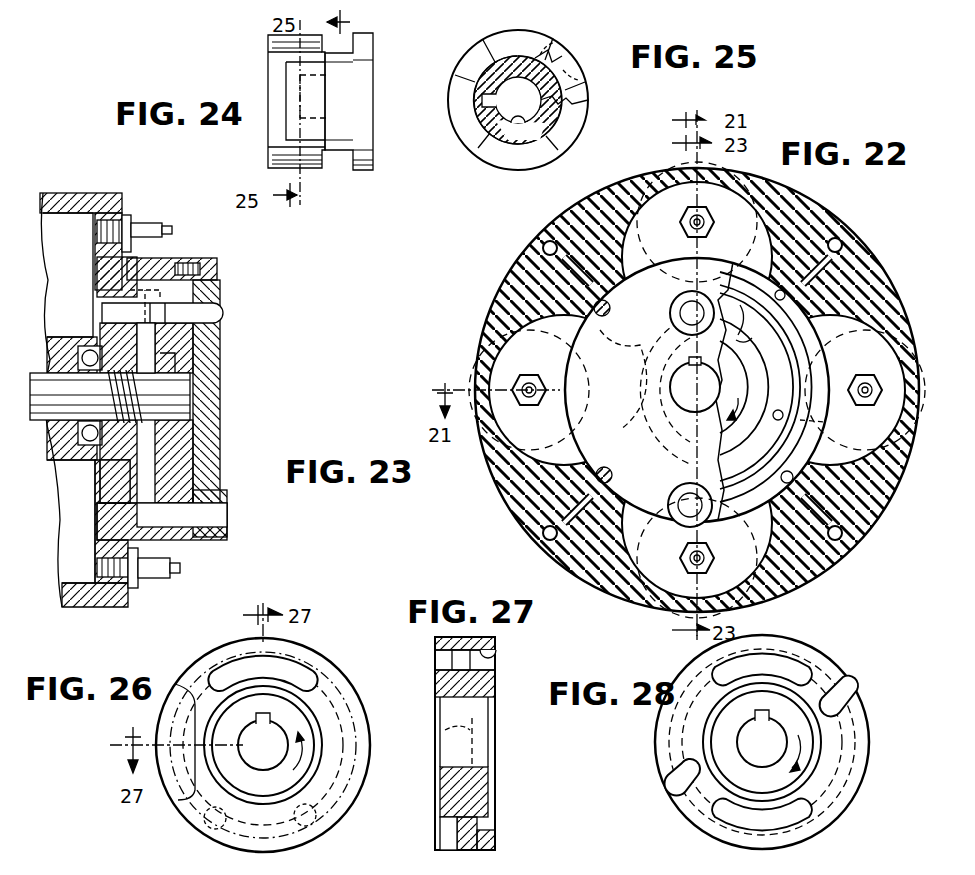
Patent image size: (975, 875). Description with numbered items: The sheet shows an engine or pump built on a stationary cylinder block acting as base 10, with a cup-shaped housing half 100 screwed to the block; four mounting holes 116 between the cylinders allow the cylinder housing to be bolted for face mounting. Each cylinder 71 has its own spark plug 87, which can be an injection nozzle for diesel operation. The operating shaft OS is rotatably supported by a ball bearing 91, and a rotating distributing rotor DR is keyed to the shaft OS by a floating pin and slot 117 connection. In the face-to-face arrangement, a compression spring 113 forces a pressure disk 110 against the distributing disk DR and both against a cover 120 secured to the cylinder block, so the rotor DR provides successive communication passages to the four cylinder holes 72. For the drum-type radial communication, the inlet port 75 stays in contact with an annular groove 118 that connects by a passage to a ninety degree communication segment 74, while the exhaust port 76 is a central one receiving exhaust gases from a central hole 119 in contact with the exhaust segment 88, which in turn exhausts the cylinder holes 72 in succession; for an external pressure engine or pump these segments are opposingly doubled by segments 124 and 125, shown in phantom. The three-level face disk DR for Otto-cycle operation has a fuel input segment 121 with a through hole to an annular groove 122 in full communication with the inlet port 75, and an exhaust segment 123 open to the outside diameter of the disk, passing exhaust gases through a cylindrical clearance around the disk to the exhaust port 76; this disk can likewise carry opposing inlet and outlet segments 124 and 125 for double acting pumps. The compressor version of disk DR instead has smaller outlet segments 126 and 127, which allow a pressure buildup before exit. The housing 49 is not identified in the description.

In FIG. 23, the base 10 is at (125, 186).
In FIG. 22, the housing 49 is at (512, 521).
In FIG. 23, the cylinder 71 is at (75, 590).
In FIG. 23, the cylinder holes 72 is at (100, 308).
In FIG. 24, the communication segment 74 is at (268, 62).
In FIG. 25, the communication segment 74 is at (476, 136).
In FIG. 22, the inlet port 75 is at (690, 293).
In FIG. 23, the inlet port 75 is at (223, 313).
In FIG. 22, the exhaust port 76 is at (690, 483).
In FIG. 23, the exhaust port 76 is at (228, 510).
In FIG. 22, the spark plug 87 is at (680, 232).
In FIG. 23, the spark plug 87 is at (150, 222).
In FIG. 25, the exhaust segment 88 is at (527, 150).
In FIG. 23, the ball bearing 91 is at (75, 350).
In FIG. 22, the housing half 100 is at (520, 280).
In FIG. 23, the pressure disk 110 is at (150, 280).
In FIG. 23, the compression spring 113 is at (100, 475).
In FIG. 22, the mounting holes 116 is at (542, 250).
In FIG. 25, the pin and slot connection 117 is at (482, 100).
In FIG. 23, the pin and slot connection 117 is at (170, 395).
In FIG. 26, the pin and slot connection 117 is at (268, 713).
In FIG. 28, the pin and slot connection 117 is at (770, 710).
In FIG. 24, the annular groove 118 is at (340, 152).
In FIG. 25, the central hole 119 is at (514, 122).
In FIG. 22, the cover 120 is at (672, 420).
In FIG. 23, the cover 120 is at (222, 405).
In FIG. 22, the fuel input segment 121 is at (738, 305).
In FIG. 23, the fuel input segment 121 is at (175, 300).
In FIG. 26, the fuel input segment 121 is at (236, 655).
In FIG. 27, the fuel input segment 121 is at (435, 660).
In FIG. 28, the fuel input segment 121 is at (785, 660).
In FIG. 22, the annular groove 122 is at (826, 424).
In FIG. 23, the annular groove 122 is at (195, 495).
In FIG. 27, the annular groove 122 is at (498, 655).
In FIG. 28, the annular groove 122 is at (860, 733).
In FIG. 26, the exhaust segment 123 is at (175, 795).
In FIG. 27, the exhaust segment 123 is at (450, 838).
In FIG. 25, the inlet segment 124 is at (590, 82).
In FIG. 26, the inlet segment 124 is at (215, 842).
In FIG. 28, the inlet segment 124 is at (735, 820).
In FIG. 25, the outlet segment 125 is at (548, 32).
In FIG. 27, the outlet segment 125 is at (435, 775).
In FIG. 28, the outlet segment 126 is at (670, 780).
In FIG. 28, the outlet segment 127 is at (852, 684).
In FIG. 24, the distributing rotor DR is at (374, 54).
In FIG. 22, the distributing rotor DR is at (789, 391).
In FIG. 23, the distributing rotor DR is at (220, 450).
In FIG. 27, the distributing rotor DR is at (428, 690).
In FIG. 22, the operating shaft OS is at (688, 364).
In FIG. 23, the operating shaft OS is at (178, 405).